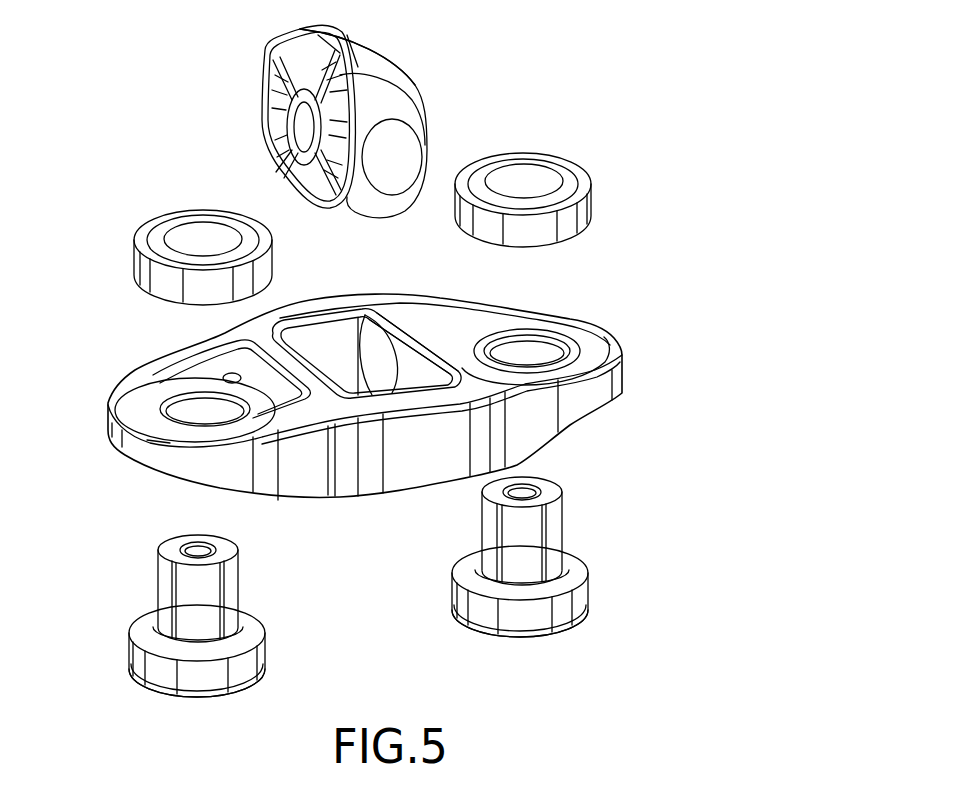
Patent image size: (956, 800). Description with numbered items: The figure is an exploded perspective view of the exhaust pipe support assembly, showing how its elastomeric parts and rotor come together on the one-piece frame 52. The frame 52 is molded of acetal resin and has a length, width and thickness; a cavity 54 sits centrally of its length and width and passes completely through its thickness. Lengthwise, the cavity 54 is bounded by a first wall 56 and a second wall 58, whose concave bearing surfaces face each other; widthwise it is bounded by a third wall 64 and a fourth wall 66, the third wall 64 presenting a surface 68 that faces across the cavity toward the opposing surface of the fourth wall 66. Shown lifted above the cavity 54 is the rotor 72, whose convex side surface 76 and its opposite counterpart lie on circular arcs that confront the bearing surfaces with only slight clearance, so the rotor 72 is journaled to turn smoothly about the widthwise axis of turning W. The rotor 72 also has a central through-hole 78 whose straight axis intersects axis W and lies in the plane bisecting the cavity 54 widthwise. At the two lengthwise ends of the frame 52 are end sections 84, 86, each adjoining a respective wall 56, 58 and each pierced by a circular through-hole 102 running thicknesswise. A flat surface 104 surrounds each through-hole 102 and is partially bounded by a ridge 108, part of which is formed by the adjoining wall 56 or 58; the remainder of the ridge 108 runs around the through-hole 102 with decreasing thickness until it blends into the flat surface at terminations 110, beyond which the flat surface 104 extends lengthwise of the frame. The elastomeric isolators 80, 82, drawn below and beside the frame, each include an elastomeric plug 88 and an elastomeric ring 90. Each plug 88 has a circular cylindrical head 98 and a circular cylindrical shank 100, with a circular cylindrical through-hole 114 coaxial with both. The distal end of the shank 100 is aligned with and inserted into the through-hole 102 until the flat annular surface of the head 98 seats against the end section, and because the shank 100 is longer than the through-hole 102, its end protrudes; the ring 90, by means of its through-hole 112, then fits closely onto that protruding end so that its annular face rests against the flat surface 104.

The frame 52 is at (610, 338).
The cavity 54 is at (423, 370).
The first wall 56 is at (287, 360).
The second wall 58 is at (423, 337).
The third wall 64 is at (333, 310).
The fourth wall 66 is at (413, 450).
The surface of third wall 68 is at (333, 335).
The rotor 72 is at (427, 110).
The side surface 76 is at (365, 53).
The central through-hole 78 is at (302, 127).
The axis of turning W is at (398, 152).
The elastomeric isolator 80 is at (291, 680).
The elastomeric isolator 82 is at (478, 650).
The end section 84 is at (125, 450).
The end section 86 is at (627, 356).
The elastomeric plug 88 is at (138, 677).
The elastomeric ring 90 is at (132, 265).
The head 98 is at (253, 630).
The shank 100 is at (170, 584).
The through-hole 102 is at (137, 427).
The flat surface 104 is at (155, 390).
The ridge 108 is at (178, 352).
The termination 110 is at (120, 398).
The through-hole of ring 112 is at (185, 228).
The through-hole of plug 114 is at (213, 545).